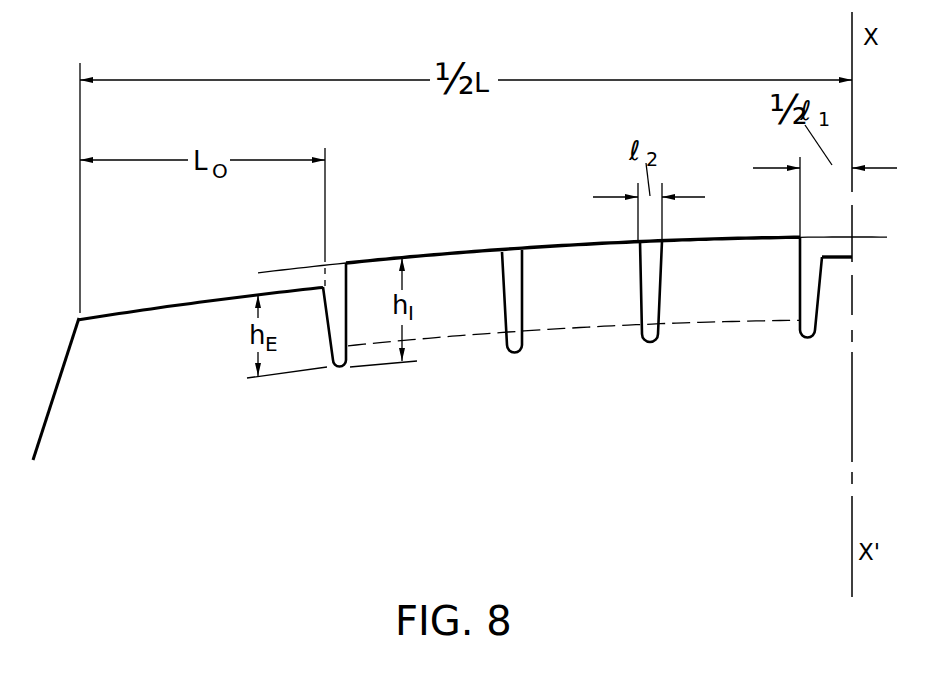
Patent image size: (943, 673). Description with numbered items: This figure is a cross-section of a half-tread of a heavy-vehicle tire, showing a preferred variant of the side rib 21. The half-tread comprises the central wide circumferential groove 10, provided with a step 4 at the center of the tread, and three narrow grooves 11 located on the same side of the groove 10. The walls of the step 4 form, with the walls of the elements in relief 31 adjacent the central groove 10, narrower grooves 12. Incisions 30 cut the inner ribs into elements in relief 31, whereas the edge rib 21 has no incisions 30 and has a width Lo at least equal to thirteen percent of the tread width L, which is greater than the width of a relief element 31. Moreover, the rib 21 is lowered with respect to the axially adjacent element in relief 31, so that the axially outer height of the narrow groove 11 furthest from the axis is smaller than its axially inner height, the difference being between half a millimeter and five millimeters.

The step 4 is at (842, 305).
The wide circumferential groove 10 is at (830, 238).
The narrow groove 11 is at (340, 367).
The groove 12 is at (807, 277).
The edge rib 21 is at (92, 368).
The incision 30 is at (492, 337).
The element in relief 31 is at (594, 292).